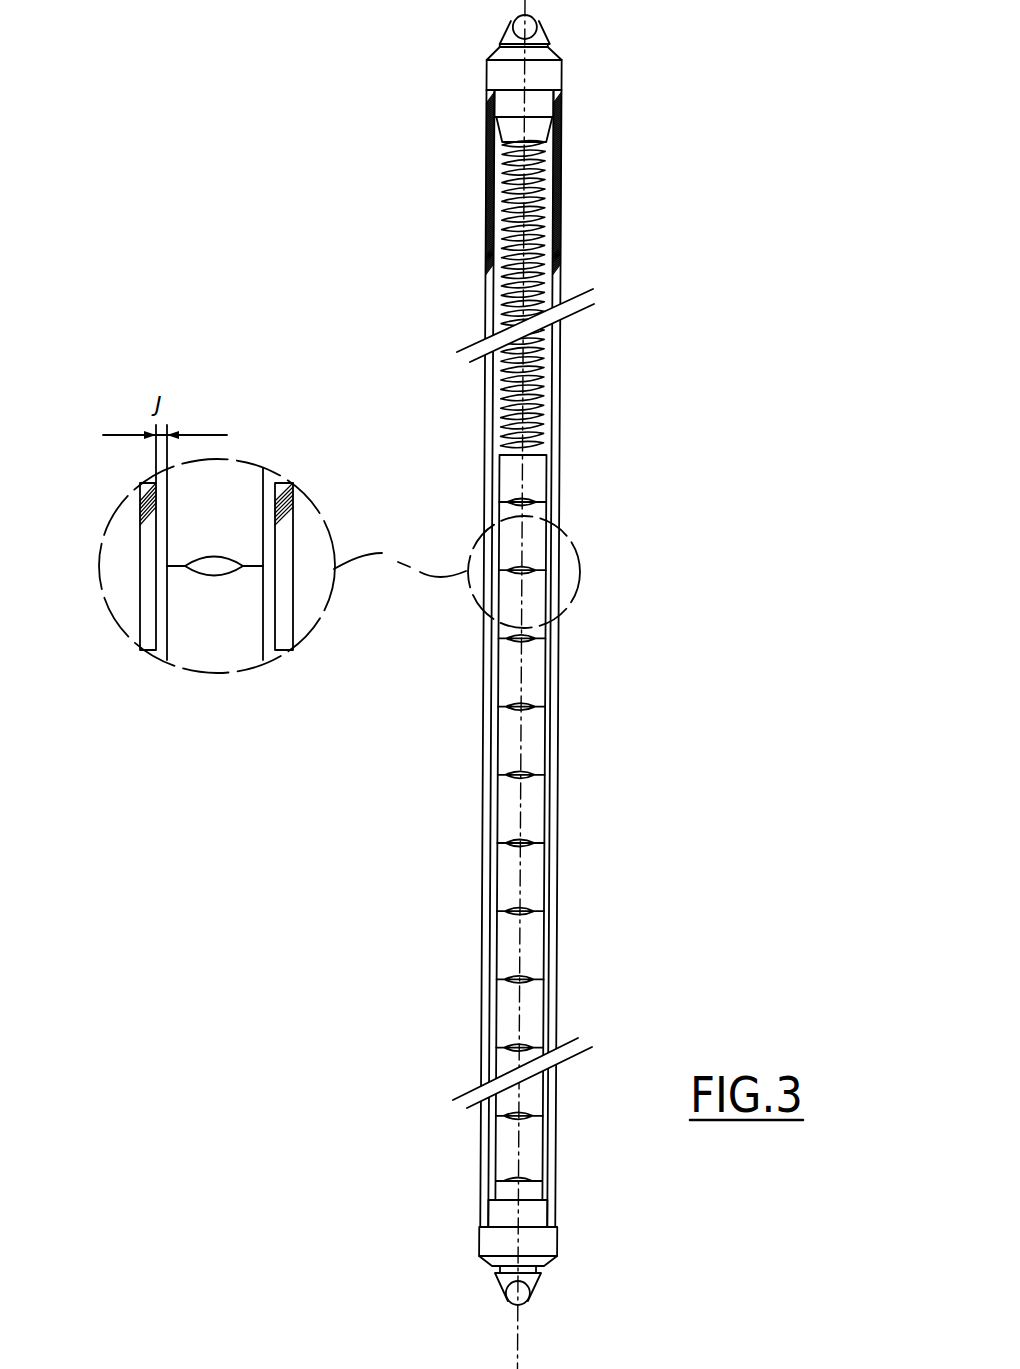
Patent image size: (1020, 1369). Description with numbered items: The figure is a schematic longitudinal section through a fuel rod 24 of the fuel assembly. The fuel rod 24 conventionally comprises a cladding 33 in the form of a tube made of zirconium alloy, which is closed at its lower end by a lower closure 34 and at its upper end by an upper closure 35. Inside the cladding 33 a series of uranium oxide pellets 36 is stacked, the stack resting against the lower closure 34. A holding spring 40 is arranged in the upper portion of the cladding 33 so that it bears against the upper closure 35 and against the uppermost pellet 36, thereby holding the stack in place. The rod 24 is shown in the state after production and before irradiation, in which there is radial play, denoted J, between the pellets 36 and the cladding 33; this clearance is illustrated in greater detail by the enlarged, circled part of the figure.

The fuel rod 24 is at (580, 479).
The cladding 33 is at (562, 892).
The lower closure 34 is at (541, 1246).
The upper closure 35 is at (543, 76).
The pellets 36 is at (533, 754).
The holding spring 40 is at (540, 272).